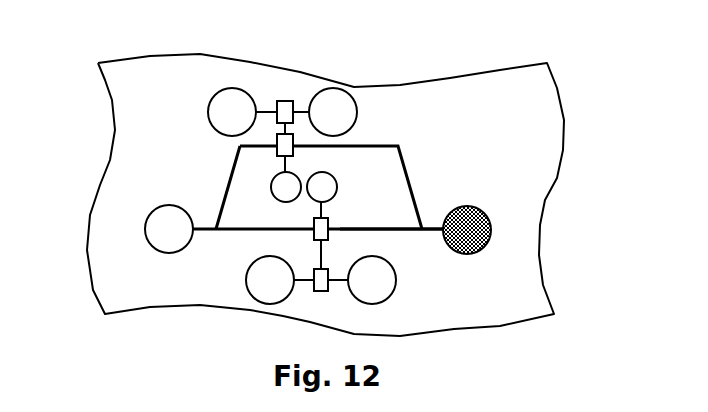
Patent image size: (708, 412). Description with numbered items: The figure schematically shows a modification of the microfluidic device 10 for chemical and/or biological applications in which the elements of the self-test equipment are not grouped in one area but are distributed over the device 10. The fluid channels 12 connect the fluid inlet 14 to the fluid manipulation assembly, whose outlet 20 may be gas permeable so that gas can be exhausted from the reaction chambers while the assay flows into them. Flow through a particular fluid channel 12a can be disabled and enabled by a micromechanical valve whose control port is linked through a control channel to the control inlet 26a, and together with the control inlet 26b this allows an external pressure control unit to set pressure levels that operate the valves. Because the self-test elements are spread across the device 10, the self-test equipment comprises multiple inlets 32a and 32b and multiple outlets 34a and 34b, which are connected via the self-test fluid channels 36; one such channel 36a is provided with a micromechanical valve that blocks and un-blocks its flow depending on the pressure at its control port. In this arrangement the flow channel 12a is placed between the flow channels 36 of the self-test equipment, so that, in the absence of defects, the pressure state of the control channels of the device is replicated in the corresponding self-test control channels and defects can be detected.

The device 10 is at (505, 41).
The fluid channels 12 is at (212, 256).
The fluid channel 12a is at (384, 231).
The fluid inlet 14 is at (148, 217).
The outlet 20 is at (488, 218).
The control inlet 26a is at (273, 180).
The control inlet 26b is at (336, 182).
The inlet 32a is at (208, 108).
The inlet 32b is at (258, 301).
The outlet 34a is at (345, 91).
The outlet 34b is at (389, 297).
The fluid channels 36 is at (262, 78).
The fluid channel 36a is at (331, 278).